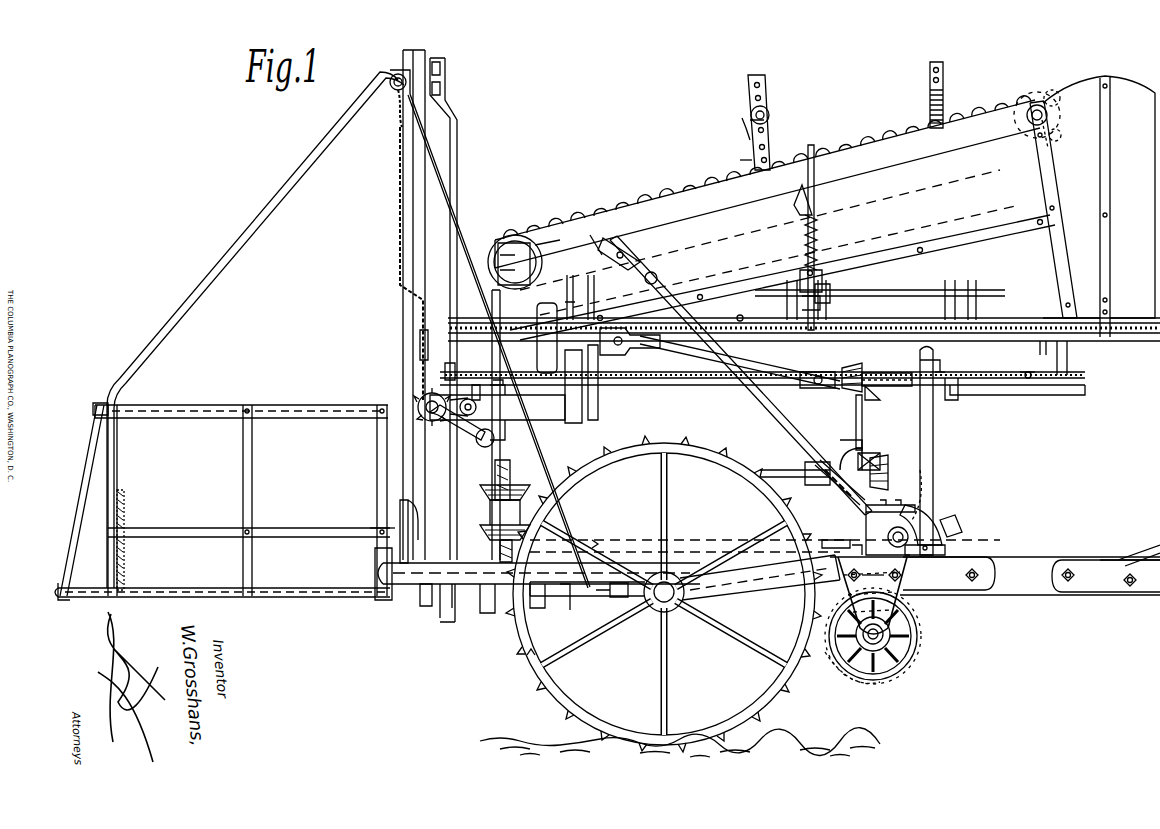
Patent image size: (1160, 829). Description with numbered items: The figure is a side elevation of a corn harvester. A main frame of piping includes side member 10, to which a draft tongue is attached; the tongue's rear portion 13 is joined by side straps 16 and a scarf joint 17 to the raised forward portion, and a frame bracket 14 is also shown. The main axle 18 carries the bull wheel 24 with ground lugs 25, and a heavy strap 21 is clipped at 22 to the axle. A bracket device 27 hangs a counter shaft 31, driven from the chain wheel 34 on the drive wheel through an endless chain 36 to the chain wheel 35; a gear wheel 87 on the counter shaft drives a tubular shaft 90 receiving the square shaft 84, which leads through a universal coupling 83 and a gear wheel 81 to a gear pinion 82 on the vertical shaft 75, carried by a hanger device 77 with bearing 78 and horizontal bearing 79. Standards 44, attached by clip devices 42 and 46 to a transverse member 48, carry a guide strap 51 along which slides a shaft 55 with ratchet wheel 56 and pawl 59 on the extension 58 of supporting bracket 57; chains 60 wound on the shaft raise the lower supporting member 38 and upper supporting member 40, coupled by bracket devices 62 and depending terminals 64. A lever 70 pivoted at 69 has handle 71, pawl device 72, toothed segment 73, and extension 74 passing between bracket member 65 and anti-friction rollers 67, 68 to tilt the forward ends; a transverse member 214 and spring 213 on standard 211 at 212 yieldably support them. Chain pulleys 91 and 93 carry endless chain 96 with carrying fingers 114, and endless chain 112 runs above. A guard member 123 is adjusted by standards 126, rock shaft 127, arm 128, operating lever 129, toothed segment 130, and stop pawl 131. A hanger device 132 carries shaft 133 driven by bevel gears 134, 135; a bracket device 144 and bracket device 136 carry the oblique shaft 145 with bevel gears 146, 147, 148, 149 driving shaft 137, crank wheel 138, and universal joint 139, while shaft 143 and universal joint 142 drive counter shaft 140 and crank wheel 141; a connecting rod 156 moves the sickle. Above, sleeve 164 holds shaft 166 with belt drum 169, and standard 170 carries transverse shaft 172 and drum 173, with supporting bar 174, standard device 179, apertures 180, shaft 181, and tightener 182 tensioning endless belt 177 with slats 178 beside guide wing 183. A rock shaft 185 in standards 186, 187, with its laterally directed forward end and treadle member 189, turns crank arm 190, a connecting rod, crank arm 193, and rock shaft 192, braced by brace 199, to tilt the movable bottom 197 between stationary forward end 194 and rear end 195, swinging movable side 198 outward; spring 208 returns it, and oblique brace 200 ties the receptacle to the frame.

The side member 10 is at (457, 597).
The rear portion of draft tongue 13 is at (1040, 560).
The frame bracket 14 is at (435, 333).
The side straps 16 is at (1105, 593).
The scarf joint 17 is at (1122, 560).
The main axle 18 is at (606, 595).
The strap 21 is at (760, 555).
The clip 22 is at (650, 618).
The main drive wheel 24 is at (528, 643).
The ground engaging lugs 25 is at (528, 660).
The bracket device 27 is at (905, 625).
The counter shaft 31 is at (895, 668).
The chain wheel 34 is at (640, 595).
The chain wheel 35 is at (918, 660).
The endless chain 36 is at (725, 640).
The lower supporting member 38 is at (1050, 395).
The upper supporting member 40 is at (1143, 340).
The clip device 42 is at (378, 587).
The standard 44 is at (402, 246).
The clip device 46 is at (396, 100).
The transverse member 48 is at (396, 76).
The guide strap 51 is at (452, 158).
The shaft 55 is at (452, 429).
The ratchet wheel 56 is at (422, 416).
The supporting bracket 57 is at (583, 405).
The rearward extension of bracket 58 is at (535, 410).
The pawl 59 is at (466, 400).
The chain 60 is at (398, 135).
The bracket devices 62 is at (1068, 368).
The depending terminals 64 is at (448, 365).
The bracket member 65 is at (934, 455).
The anti-friction roller 67 is at (935, 515).
The anti-friction roller 68 is at (945, 549).
The pivot 69 is at (888, 532).
The lever 70 is at (778, 400).
The handle 71 is at (612, 238).
The pawl device 72 is at (852, 498).
The toothed segment 73 is at (900, 503).
The lever extension 74 is at (958, 524).
The vertical shaft 75 is at (490, 300).
The hanger device 77 is at (533, 452).
The bearing 78 is at (479, 603).
The horizontal bearing 79 is at (540, 575).
The gear wheel 81 is at (495, 550).
The gear pinion 82 is at (499, 516).
The universal coupling 83 is at (570, 597).
The square shaft 84 is at (600, 540).
The gear wheel 87 is at (860, 665).
The tubular shaft 90 is at (750, 560).
The chain pulley 91 is at (482, 376).
The chain pulley 93 is at (1028, 372).
The endless chain 96 is at (650, 386).
The endless chain 112 is at (870, 318).
The carrying fingers 114 is at (1043, 353).
The guard member 123 is at (738, 306).
The standards 126 is at (749, 297).
The rock shaft 127 is at (895, 290).
The arm 128 is at (801, 297).
The operating lever 129 is at (815, 228).
The toothed segment 130 is at (800, 278).
The stop pawl 131 is at (805, 238).
The hanger device 132 is at (856, 418).
The shaft 133 is at (782, 470).
The bevel gear 134 is at (512, 462).
The bevel gear 135 is at (495, 485).
The bracket device 136 is at (890, 404).
The shaft 137 is at (914, 359).
The crank wheel 138 is at (937, 360).
The universal joint 139 is at (822, 372).
The counter shaft 140 is at (590, 348).
The crank wheel 141 is at (537, 350).
The universal joint 142 is at (632, 352).
The shaft 143 is at (762, 370).
The bracket device 144 is at (844, 446).
The oblique shaft 145 is at (866, 432).
The bevel gear 146 is at (890, 468).
The bevel gear 147 is at (880, 455).
The bevel gear 148 is at (884, 388).
The bevel gear 149 is at (852, 367).
The connecting rod 156 is at (950, 398).
The sleeve 164 is at (527, 244).
The shaft 166 is at (505, 240).
The belt carrying drum 169 is at (560, 230).
The standard 170 is at (1052, 178).
The transverse shaft 172 is at (1052, 110).
The belt carrying drum 173 is at (1060, 132).
The supporting bar 174 is at (592, 240).
The endless belt 177 is at (665, 183).
The slats 178 is at (644, 196).
The standard device 179 is at (748, 110).
The apertures 180 is at (768, 115).
The shaft 181 is at (770, 125).
The tightener drum 182 is at (740, 160).
The guide wing 183 is at (845, 165).
The rock shaft 185 is at (450, 605).
The standard 186 is at (875, 574).
The standard 187 is at (432, 597).
The treadle member 189 is at (928, 500).
The crank arm 190 is at (420, 530).
The rock shaft 192 is at (84, 588).
The crank arm 193 is at (386, 602).
The stationary forward end 194 is at (386, 460).
The stationary rear end 195 is at (110, 470).
The movable bottom 197 is at (283, 598).
The movable side 198 is at (218, 436).
The brace 199 is at (88, 467).
The oblique brace 200 is at (228, 260).
The spring 208 is at (128, 562).
The standard 211 is at (938, 62).
The spring connection point 212 is at (930, 85).
The spring 213 is at (946, 100).
The transverse member 214 is at (1018, 372).